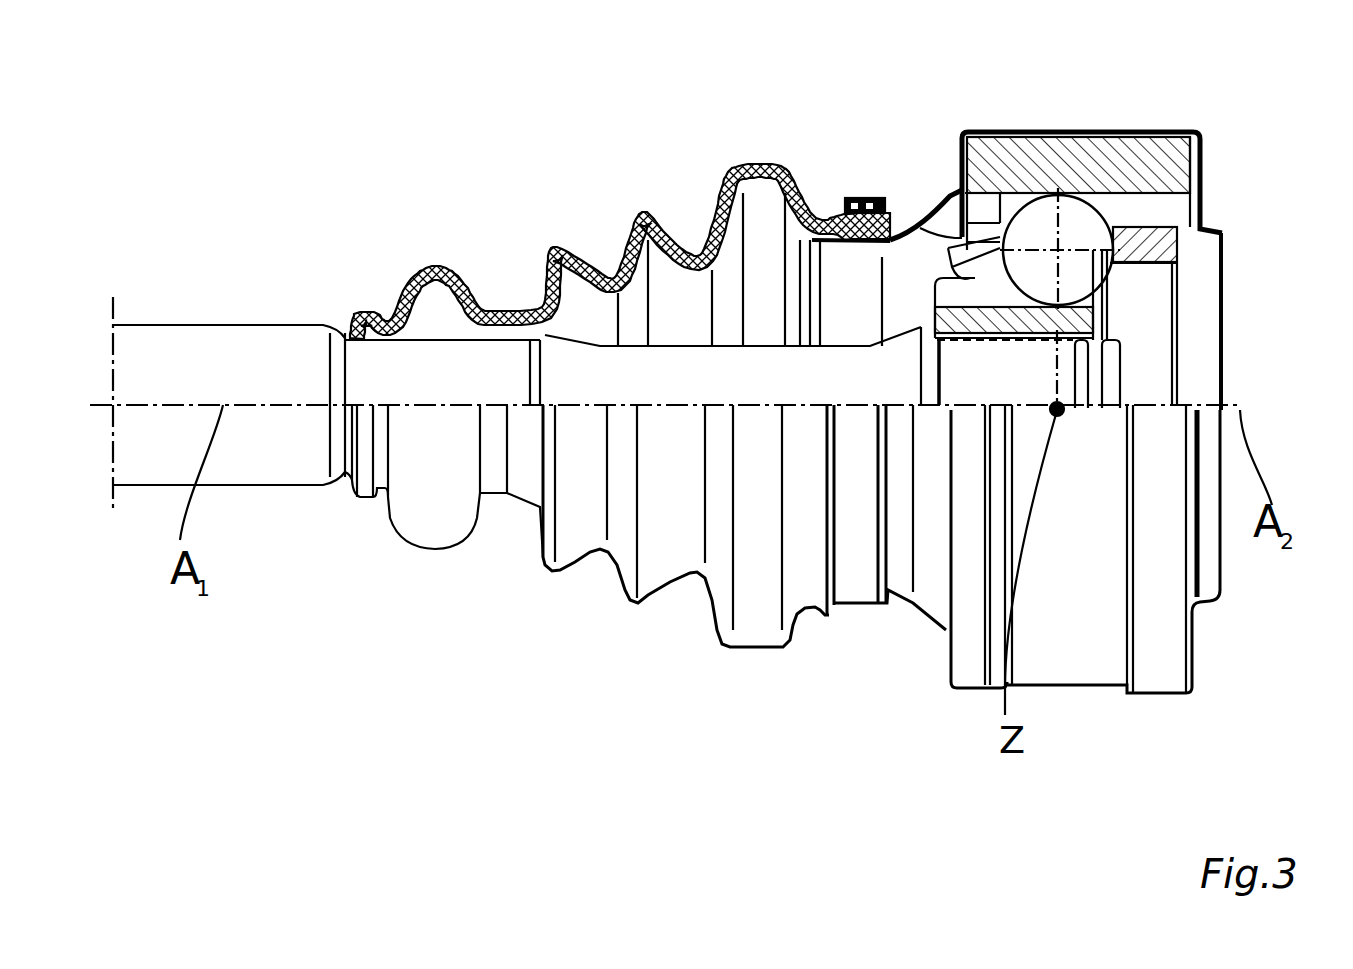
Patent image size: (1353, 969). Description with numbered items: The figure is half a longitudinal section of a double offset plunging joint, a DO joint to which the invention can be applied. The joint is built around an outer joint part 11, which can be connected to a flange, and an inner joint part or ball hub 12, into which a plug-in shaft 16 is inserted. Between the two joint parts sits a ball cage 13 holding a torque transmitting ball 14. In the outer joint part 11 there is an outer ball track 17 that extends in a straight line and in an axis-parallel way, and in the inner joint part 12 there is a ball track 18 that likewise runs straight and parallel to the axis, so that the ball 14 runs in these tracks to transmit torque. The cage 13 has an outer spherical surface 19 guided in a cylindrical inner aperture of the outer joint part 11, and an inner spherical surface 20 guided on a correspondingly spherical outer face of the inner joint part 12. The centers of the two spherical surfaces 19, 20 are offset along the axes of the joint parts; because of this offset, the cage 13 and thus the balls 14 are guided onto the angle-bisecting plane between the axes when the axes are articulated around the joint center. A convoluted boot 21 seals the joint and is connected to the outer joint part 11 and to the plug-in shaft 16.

The outer joint part 11 is at (1058, 217).
The inner joint part 12 is at (1020, 192).
The ball cage 13 is at (1126, 233).
The torque transmitting ball 14 is at (1080, 222).
The plug-in shaft 16 is at (297, 335).
The outer ball track 17 is at (950, 247).
The ball track 18 is at (987, 285).
The outer spherical surface 19 is at (1178, 195).
The inner spherical surface 20 is at (938, 202).
The convoluted boot 21 is at (677, 223).